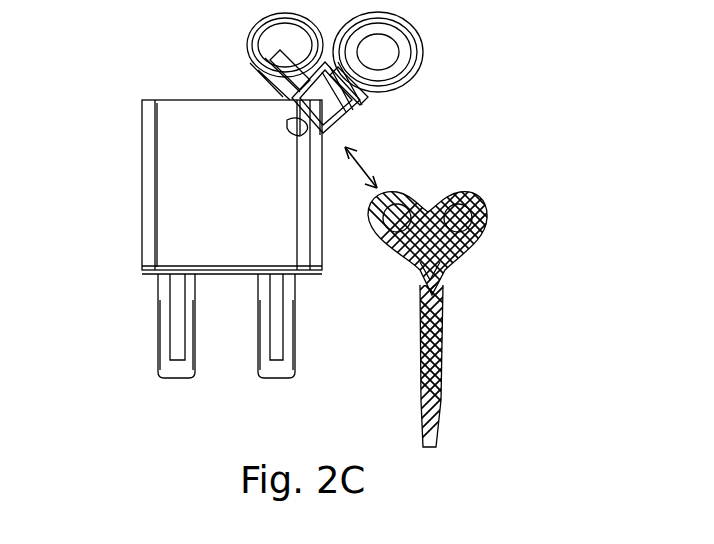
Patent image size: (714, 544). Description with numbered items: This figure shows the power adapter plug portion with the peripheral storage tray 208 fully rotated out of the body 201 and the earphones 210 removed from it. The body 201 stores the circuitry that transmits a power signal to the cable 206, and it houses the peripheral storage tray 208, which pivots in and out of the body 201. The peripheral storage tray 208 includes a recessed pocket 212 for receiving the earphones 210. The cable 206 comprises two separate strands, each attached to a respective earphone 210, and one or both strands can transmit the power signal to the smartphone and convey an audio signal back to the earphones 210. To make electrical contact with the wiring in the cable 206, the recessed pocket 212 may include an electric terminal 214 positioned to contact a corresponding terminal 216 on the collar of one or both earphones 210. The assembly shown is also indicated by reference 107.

The body 201 is at (168, 163).
The peripheral storage tray 208 is at (410, 70).
The recessed pocket 212 is at (366, 47).
The electric terminal 214 is at (303, 72).
The earphones 210 is at (475, 222).
The terminal 216 is at (453, 243).
The cable 206 is at (430, 368).
The charging cable assembly 107 is at (411, 369).